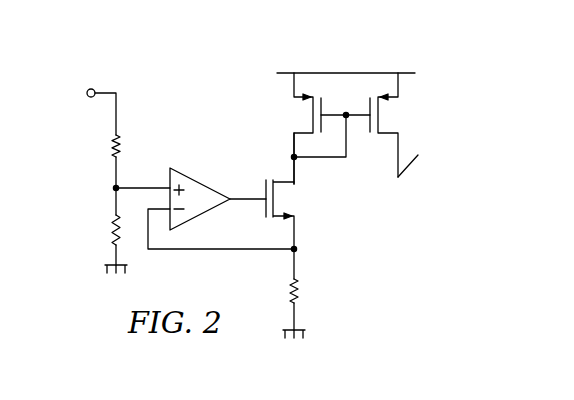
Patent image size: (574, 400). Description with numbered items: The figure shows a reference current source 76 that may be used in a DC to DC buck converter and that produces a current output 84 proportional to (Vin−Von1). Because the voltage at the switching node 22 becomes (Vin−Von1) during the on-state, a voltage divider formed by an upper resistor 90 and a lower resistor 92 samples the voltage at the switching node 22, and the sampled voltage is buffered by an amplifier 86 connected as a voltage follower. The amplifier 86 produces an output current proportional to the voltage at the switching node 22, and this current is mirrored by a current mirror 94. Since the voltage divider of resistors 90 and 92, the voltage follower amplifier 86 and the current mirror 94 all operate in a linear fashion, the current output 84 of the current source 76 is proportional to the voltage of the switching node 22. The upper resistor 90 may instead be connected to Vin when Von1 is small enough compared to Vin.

The switching node 22 is at (89, 89).
The upper resistor 90 is at (108, 143).
The lower resistor 92 is at (110, 227).
The amplifier 86 is at (202, 177).
The current source 76 is at (380, 90).
The current mirror 94 is at (419, 105).
The current output 84 is at (410, 165).